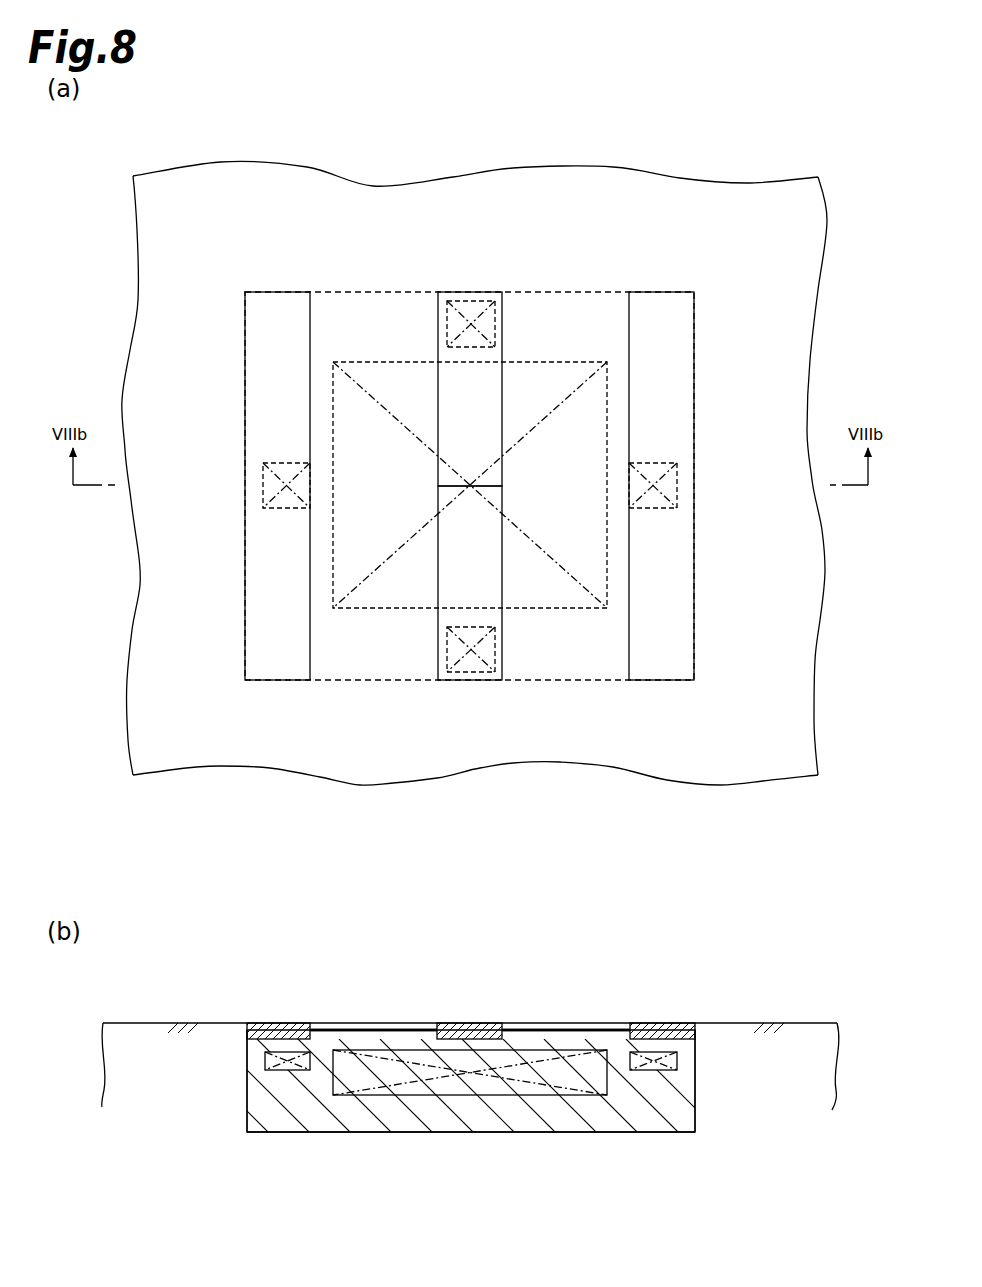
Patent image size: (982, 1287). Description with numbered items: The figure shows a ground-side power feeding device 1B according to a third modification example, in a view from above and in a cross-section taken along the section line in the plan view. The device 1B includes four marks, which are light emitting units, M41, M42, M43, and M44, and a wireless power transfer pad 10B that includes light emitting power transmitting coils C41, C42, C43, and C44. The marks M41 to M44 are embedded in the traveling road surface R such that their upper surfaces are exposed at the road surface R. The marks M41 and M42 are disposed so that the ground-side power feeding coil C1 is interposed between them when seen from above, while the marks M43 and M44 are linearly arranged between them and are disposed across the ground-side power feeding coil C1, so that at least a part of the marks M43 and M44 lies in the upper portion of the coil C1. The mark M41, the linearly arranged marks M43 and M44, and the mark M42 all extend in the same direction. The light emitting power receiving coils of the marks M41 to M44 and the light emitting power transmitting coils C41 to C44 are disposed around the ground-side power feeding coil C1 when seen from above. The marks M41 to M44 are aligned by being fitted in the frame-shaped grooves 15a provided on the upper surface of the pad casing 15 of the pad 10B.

The traveling road surface R is at (758, 200).
The wireless power transfer pad 10B is at (337, 288).
The pad casing 15 is at (667, 1133).
The frame-shaped grooves 15a is at (265, 1038).
The mark M41 is at (262, 292).
The mark M42 is at (668, 292).
The mark M43 is at (437, 588).
The mark M44 is at (438, 319).
The ground-side power feeding coil C1 is at (390, 362).
The light emitting power transmitting coil C41 is at (263, 489).
The light emitting power transmitting coil C42 is at (677, 500).
The light emitting power transmitting coil C43 is at (497, 650).
The light emitting power transmitting coil C44 is at (511, 317).
The ground-side power feeding device 1B is at (574, 243).